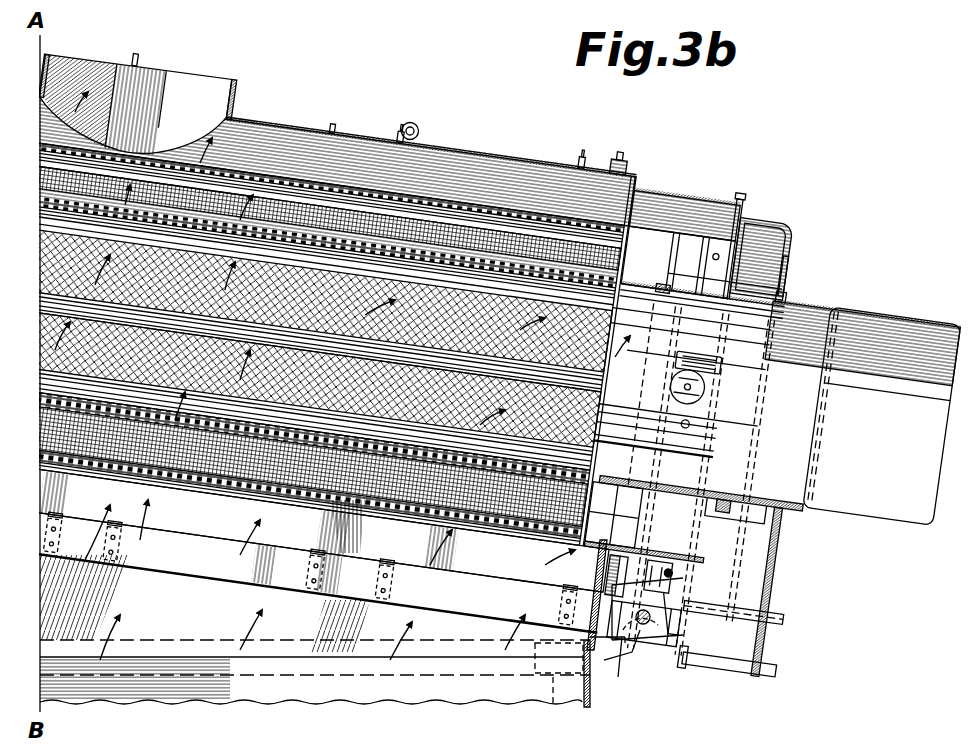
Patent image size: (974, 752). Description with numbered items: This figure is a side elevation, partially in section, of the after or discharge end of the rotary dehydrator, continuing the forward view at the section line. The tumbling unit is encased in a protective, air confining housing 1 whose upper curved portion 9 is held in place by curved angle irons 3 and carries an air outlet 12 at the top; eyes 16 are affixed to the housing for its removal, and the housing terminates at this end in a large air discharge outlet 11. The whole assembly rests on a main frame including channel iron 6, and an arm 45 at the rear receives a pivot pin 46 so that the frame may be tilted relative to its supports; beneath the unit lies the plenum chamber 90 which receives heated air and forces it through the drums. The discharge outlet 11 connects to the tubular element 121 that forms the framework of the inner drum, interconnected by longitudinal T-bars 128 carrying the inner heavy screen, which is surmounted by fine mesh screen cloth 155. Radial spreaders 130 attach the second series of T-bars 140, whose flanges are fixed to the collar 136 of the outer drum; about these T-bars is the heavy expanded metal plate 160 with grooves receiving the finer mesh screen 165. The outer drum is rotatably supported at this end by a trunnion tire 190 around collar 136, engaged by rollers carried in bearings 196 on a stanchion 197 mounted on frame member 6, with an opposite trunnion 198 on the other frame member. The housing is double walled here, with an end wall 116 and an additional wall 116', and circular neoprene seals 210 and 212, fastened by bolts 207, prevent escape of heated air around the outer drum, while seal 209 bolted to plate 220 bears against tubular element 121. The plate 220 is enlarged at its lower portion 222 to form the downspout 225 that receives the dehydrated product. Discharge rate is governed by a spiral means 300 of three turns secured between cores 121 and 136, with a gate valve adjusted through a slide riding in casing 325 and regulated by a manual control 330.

The housing 1 is at (340, 132).
The curved angle irons 3 is at (450, 142).
The channel iron 6 is at (275, 588).
The upper curved portion 9 is at (541, 166).
The air discharge outlet 11 is at (896, 421).
The air outlet 12 is at (240, 93).
The eye 16 is at (417, 124).
The arm 45 is at (622, 665).
The pivot pin 46 is at (645, 628).
The plenum chamber 90 is at (305, 700).
The wall 116 is at (644, 394).
The additional wall 116' is at (700, 604).
The tubular element 121 is at (776, 497).
The T-bars 128 is at (610, 409).
The spreaders 130 is at (755, 288).
The tubular element 136 is at (600, 530).
The T-bars 140 is at (508, 520).
The fine mesh screen cloth 155 is at (300, 478).
The heavy expanded metal or punched plate 160 is at (258, 165).
The finer mesh screen 165 is at (340, 150).
The trunnion tire 190 is at (690, 220).
The bearings 196 is at (695, 560).
The stanchion 197 is at (685, 625).
The trunnion 198 is at (606, 575).
The bolts 207 is at (742, 232).
The seal 209 is at (783, 304).
The seal 210 is at (670, 200).
The seal 212 is at (770, 218).
The plate 220 is at (784, 258).
The enlarged lower portion 222 is at (772, 575).
The downspout 225 is at (700, 668).
The spiral means 300 is at (660, 330).
The casing 325 is at (718, 362).
The control 330 is at (708, 406).